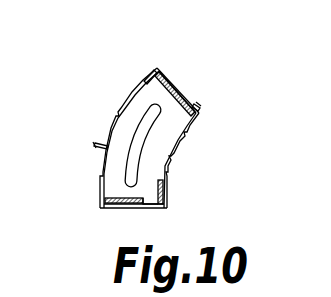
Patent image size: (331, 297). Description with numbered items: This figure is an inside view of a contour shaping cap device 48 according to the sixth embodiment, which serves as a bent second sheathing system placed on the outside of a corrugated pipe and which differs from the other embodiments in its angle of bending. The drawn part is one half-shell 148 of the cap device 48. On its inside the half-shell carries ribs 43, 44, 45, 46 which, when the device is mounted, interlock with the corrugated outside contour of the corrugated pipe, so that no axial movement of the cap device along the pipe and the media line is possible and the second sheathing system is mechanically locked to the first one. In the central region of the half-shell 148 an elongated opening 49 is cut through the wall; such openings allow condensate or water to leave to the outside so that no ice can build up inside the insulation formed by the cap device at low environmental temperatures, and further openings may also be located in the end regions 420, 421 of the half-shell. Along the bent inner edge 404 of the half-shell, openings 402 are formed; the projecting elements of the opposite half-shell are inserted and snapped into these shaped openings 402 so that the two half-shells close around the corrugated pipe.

The opening 402 is at (147, 80).
The rib 45 is at (170, 82).
The rib 46 is at (187, 93).
The end region 420 is at (198, 104).
The opening 49 is at (147, 127).
The inner edge 404 is at (125, 112).
The contour shaping cap device 48 is at (95, 144).
The half-shell 148 is at (118, 188).
The rib 44 is at (112, 200).
The rib 43 is at (118, 208).
The end region 421 is at (143, 202).